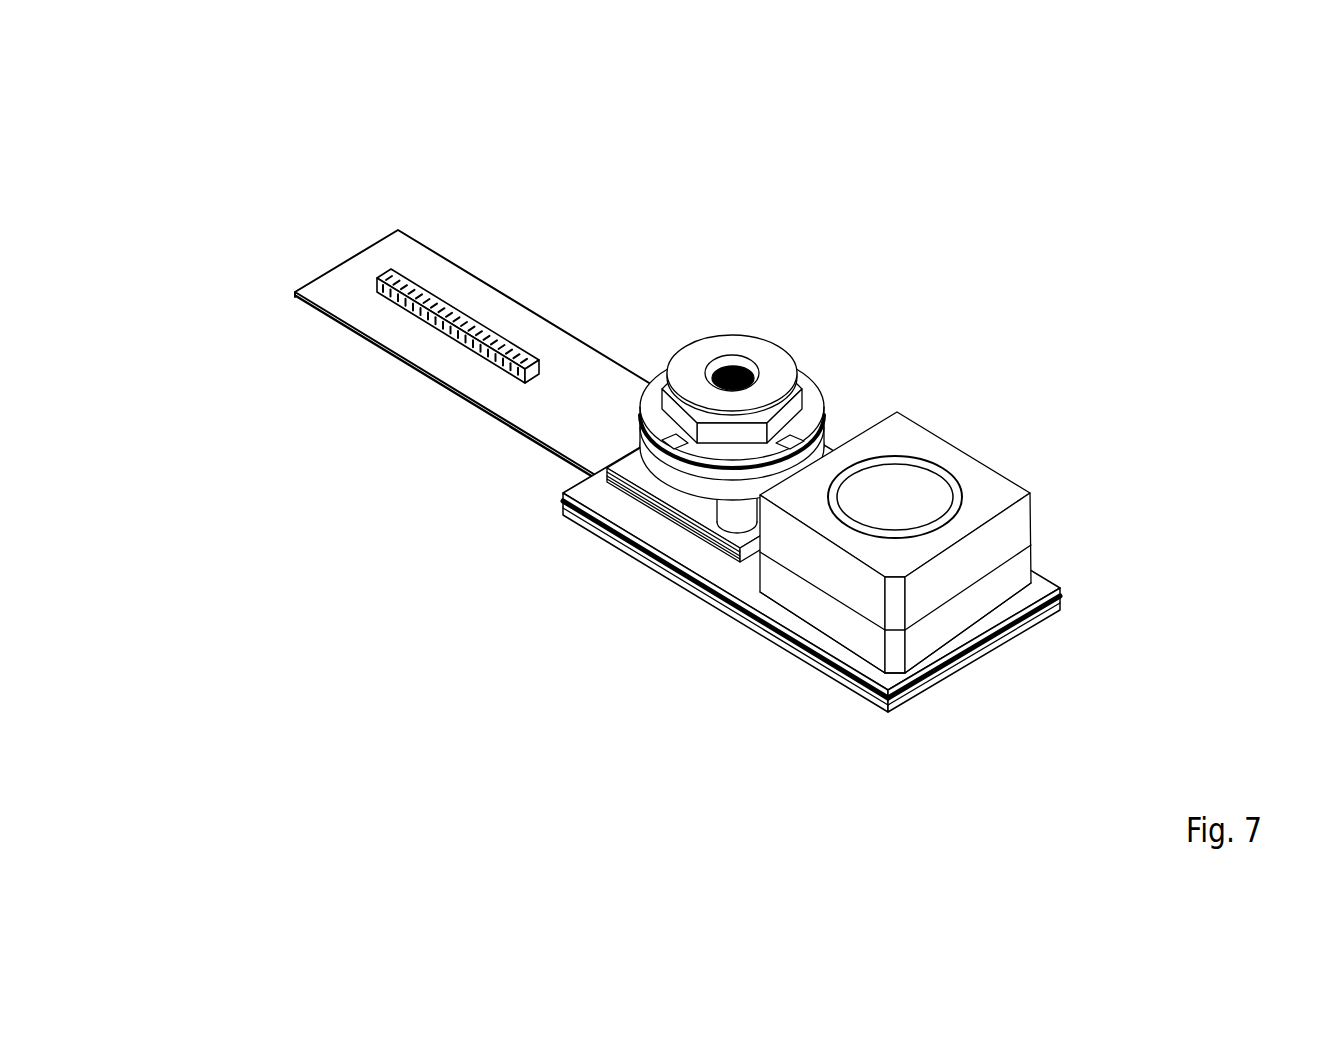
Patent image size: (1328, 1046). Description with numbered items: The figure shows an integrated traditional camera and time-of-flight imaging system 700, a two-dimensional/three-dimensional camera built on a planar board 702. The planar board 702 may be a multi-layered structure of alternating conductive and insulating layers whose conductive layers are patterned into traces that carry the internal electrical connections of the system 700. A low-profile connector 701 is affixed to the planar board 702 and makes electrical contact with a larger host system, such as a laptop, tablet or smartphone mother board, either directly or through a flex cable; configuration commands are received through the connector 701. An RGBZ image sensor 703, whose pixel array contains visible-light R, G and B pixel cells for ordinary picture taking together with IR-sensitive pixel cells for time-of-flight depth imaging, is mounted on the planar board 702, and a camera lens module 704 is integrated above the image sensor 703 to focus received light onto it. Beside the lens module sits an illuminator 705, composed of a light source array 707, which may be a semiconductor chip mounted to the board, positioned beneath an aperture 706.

The integrated traditional camera and time-of-flight imaging system 700 is at (140, 97).
The connector 701 is at (633, 237).
The planar board 702 is at (425, 369).
The RGBZ image sensor 703 is at (645, 520).
The camera lens module 704 is at (829, 362).
The illuminator 705 is at (976, 499).
The aperture 706 is at (881, 500).
The light source array 707 is at (818, 646).